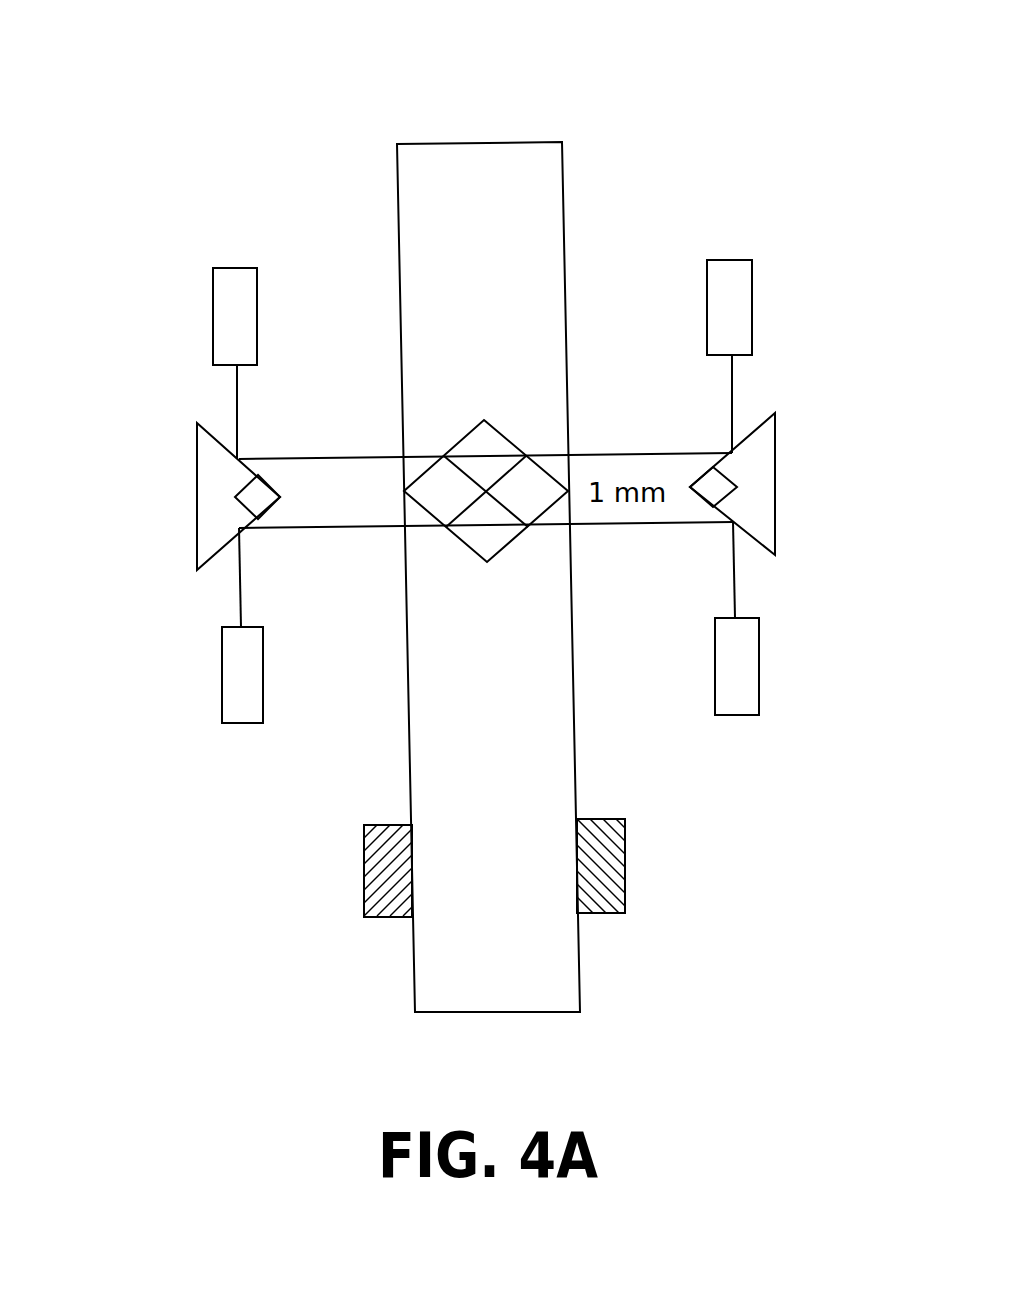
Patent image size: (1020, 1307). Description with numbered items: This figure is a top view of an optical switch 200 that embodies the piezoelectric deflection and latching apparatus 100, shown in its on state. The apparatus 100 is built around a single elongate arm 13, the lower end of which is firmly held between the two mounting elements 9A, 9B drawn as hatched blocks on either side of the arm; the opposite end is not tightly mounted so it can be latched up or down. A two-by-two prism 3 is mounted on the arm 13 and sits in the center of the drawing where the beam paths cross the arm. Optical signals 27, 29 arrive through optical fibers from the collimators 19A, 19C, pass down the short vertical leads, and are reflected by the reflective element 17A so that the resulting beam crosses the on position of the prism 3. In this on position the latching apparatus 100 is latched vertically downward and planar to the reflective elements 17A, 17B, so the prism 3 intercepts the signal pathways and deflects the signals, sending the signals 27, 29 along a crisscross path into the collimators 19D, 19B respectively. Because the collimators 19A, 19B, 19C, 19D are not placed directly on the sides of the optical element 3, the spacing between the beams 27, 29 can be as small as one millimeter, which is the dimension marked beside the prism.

The optical switch 200 is at (500, 40).
The piezoelectric latching apparatus 100 is at (323, 791).
The arm 13 is at (578, 747).
The 2×2 prism 3 is at (518, 550).
The reflective element 17A is at (195, 497).
The reflective element 17B is at (776, 487).
The collimator 19A is at (213, 315).
The collimator 19B is at (752, 307).
The collimator 19C is at (221, 677).
The collimator 19D is at (760, 666).
The optical signal 27 is at (243, 400).
The optical signal 29 is at (245, 592).
The mounting element 9A is at (362, 882).
The mounting element 9B is at (627, 868).